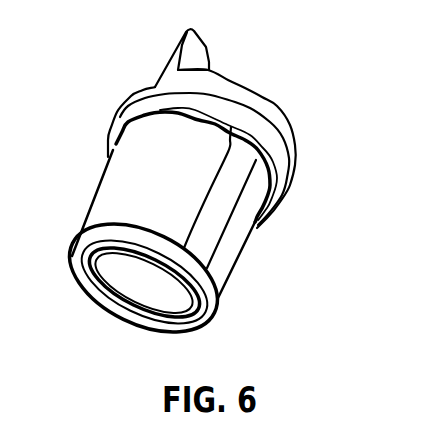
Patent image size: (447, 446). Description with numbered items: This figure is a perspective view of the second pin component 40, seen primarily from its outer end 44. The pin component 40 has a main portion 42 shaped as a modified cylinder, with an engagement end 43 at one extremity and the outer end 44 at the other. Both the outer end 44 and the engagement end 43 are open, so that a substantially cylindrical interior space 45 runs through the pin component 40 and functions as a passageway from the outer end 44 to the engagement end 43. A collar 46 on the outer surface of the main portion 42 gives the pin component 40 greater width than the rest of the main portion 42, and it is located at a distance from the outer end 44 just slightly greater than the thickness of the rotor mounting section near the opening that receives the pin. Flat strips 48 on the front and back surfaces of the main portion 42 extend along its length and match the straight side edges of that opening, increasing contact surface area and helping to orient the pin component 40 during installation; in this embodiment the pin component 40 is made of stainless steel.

The second pin component 40 is at (208, 192).
The main portion 42 is at (101, 191).
The engagement end 43 is at (244, 86).
The outer end 44 is at (89, 290).
The interior space 45 is at (142, 283).
The collar 46 is at (290, 185).
The flat strips 48 is at (207, 232).